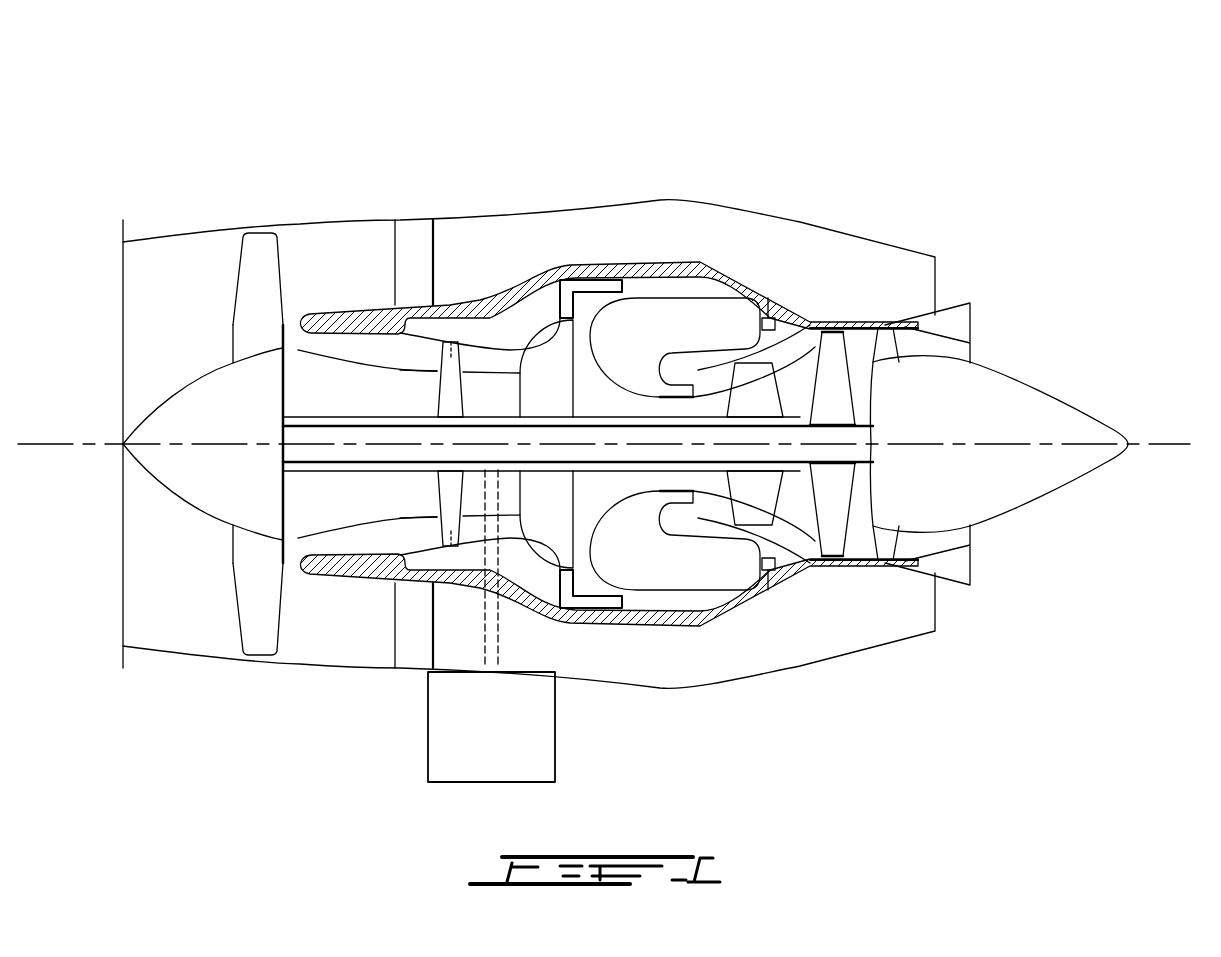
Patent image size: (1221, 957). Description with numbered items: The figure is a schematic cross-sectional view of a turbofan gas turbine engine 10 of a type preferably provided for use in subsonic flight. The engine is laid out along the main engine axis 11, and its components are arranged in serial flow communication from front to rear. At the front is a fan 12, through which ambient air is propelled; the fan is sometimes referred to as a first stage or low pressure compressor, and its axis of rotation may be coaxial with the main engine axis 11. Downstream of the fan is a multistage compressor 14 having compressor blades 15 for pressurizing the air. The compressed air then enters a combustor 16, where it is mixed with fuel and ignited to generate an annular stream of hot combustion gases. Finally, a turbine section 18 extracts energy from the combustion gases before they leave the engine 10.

The turbofan gas turbine engine 10 is at (604, 410).
The main engine axis 11 is at (1152, 444).
The fan 12 is at (253, 583).
The multistage compressor 14 is at (505, 362).
The compressor blades 15 is at (453, 345).
The combustor 16 is at (677, 317).
The turbine section 18 is at (792, 505).